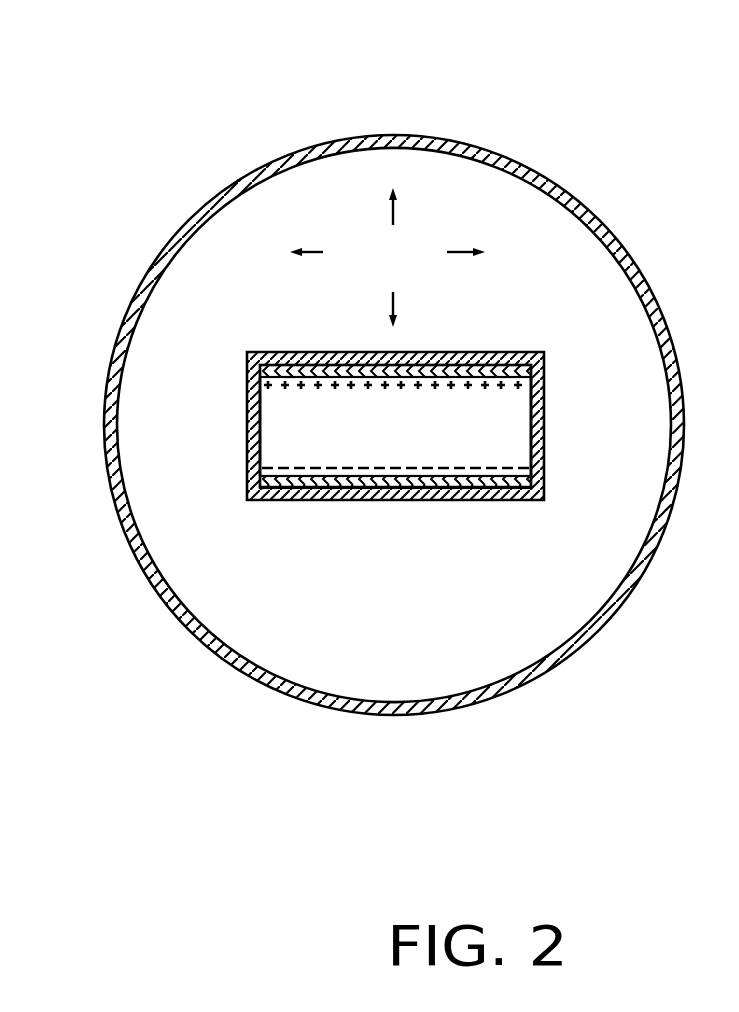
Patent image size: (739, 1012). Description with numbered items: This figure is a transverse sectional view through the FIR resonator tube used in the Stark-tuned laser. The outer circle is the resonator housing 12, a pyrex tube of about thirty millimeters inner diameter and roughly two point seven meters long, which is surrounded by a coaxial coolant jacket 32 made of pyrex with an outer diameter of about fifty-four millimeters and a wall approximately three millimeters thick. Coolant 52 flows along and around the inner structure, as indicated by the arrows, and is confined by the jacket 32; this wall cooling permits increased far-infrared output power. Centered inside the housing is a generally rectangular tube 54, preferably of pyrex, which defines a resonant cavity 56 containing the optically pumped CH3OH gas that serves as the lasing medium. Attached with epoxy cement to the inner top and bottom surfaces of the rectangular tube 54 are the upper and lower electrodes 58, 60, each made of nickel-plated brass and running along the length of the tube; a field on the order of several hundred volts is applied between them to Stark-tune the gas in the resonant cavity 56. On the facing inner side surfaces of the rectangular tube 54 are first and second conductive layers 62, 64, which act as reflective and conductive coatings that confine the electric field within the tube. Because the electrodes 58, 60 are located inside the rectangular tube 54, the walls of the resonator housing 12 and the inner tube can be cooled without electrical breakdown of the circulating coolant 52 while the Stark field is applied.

The resonator housing 12 is at (361, 365).
The coolant jacket 32 is at (533, 170).
The coolant 52 is at (387, 257).
The rectangular tube 54 is at (247, 460).
The resonant cavity 56 is at (372, 442).
The upper electrode 58 is at (427, 377).
The lower electrode 60 is at (378, 470).
The first conductive layer 62 is at (260, 458).
The second conductive layer 64 is at (532, 425).